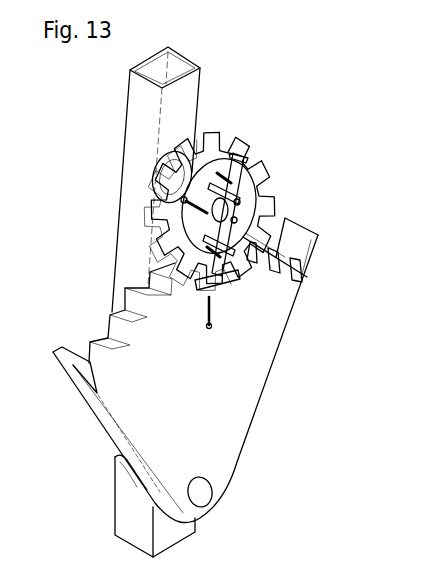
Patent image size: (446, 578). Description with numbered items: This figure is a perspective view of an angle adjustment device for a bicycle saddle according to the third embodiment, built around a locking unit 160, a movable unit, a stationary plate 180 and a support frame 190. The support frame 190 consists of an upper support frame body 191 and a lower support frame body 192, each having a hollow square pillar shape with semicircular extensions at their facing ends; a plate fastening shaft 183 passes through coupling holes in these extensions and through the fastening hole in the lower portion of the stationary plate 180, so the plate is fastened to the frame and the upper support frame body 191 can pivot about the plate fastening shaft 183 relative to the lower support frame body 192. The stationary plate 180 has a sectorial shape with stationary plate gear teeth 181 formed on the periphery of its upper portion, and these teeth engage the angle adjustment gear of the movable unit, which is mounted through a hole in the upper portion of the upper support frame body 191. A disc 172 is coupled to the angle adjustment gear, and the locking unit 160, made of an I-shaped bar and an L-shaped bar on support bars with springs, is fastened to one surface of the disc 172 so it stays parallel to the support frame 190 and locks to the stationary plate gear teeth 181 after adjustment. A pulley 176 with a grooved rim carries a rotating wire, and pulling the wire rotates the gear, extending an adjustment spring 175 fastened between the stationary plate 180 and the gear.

The locking unit 160 is at (263, 177).
The disc 172 is at (255, 205).
The adjustment spring 175 is at (215, 313).
The pulley 176 is at (180, 150).
The stationary plate 180 is at (255, 370).
The stationary plate gear teeth 181 is at (85, 342).
The plate fastening shaft 183 is at (204, 495).
The support frame 190 is at (196, 96).
The upper support frame body 191 is at (113, 232).
The lower support frame body 192 is at (133, 523).